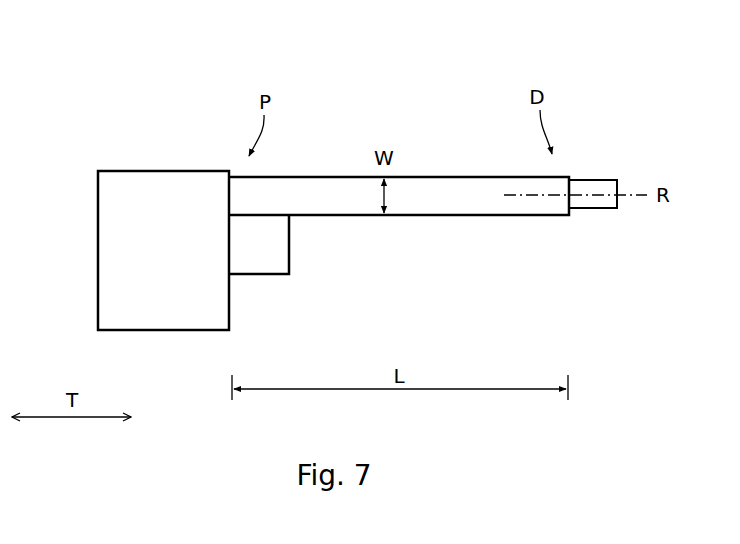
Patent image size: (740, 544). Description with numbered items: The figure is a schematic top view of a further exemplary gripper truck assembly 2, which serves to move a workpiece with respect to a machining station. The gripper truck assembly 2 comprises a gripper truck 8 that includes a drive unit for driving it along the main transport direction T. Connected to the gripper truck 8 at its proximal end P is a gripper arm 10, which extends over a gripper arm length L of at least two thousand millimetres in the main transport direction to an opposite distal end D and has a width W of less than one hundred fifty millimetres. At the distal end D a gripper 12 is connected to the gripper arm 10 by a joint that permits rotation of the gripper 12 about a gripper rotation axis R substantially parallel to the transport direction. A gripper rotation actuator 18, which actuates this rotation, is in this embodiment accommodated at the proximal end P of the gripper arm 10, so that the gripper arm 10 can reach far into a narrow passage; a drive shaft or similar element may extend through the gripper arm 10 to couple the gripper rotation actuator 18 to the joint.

The gripper truck assembly 2 is at (419, 79).
The gripper truck 8 is at (157, 183).
The gripper arm 10 is at (456, 185).
The gripper 12 is at (595, 200).
The gripper rotation actuator 18 is at (264, 262).